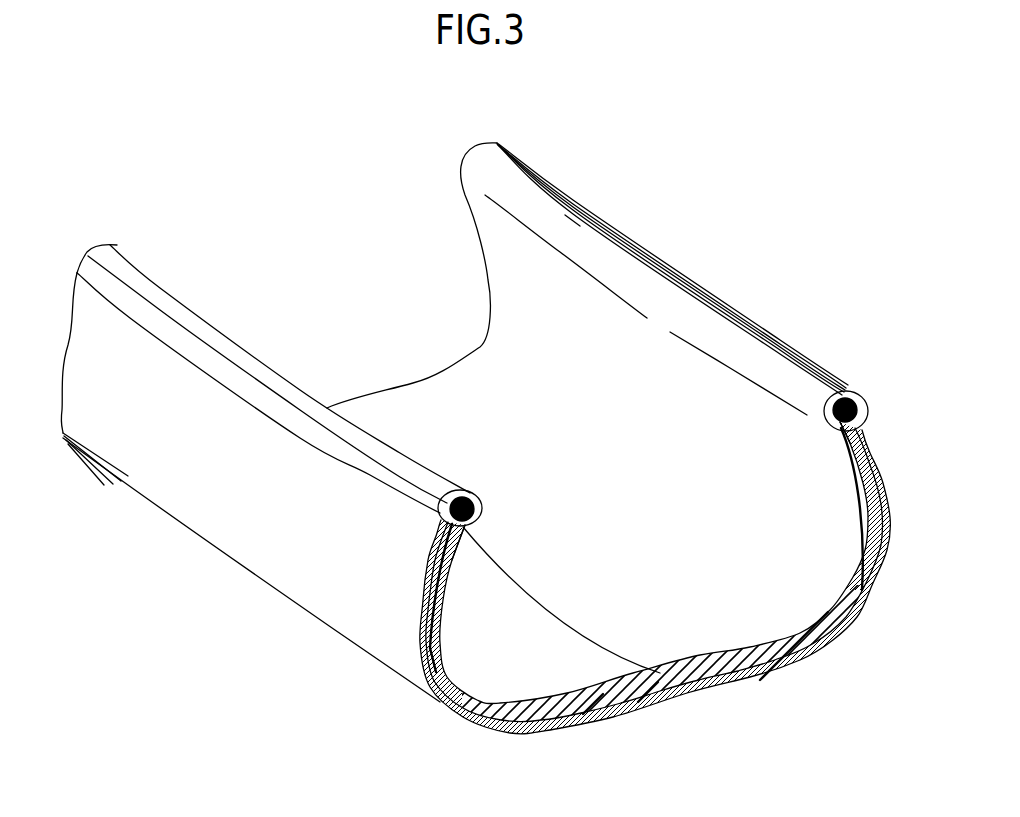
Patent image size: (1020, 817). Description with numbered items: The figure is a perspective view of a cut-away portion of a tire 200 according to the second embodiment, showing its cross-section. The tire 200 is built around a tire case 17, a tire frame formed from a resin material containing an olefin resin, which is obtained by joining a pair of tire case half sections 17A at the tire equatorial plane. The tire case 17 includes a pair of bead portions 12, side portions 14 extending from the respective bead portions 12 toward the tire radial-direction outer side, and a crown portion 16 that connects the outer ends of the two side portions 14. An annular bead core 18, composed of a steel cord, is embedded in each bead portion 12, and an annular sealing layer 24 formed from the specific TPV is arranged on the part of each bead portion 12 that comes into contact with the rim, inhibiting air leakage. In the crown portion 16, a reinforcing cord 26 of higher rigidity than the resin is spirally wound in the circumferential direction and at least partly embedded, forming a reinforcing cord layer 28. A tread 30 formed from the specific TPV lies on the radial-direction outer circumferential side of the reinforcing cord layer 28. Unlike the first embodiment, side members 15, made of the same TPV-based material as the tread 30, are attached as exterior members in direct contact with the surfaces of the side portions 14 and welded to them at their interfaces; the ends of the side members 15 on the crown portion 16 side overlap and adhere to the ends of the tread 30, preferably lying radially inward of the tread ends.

The tire 200 is at (722, 242).
The bead portion 12 is at (438, 477).
The sealing layer 24 is at (387, 477).
The bead core 18 is at (482, 513).
The side portion 14 is at (441, 630).
The side member 15 is at (373, 652).
The crown portion 16 is at (752, 680).
The tire case 17 is at (505, 552).
The tire case half section 17A is at (523, 613).
The reinforcing cord 26 is at (588, 714).
The reinforcing cord layer 28 is at (645, 704).
The tread 30 is at (802, 660).